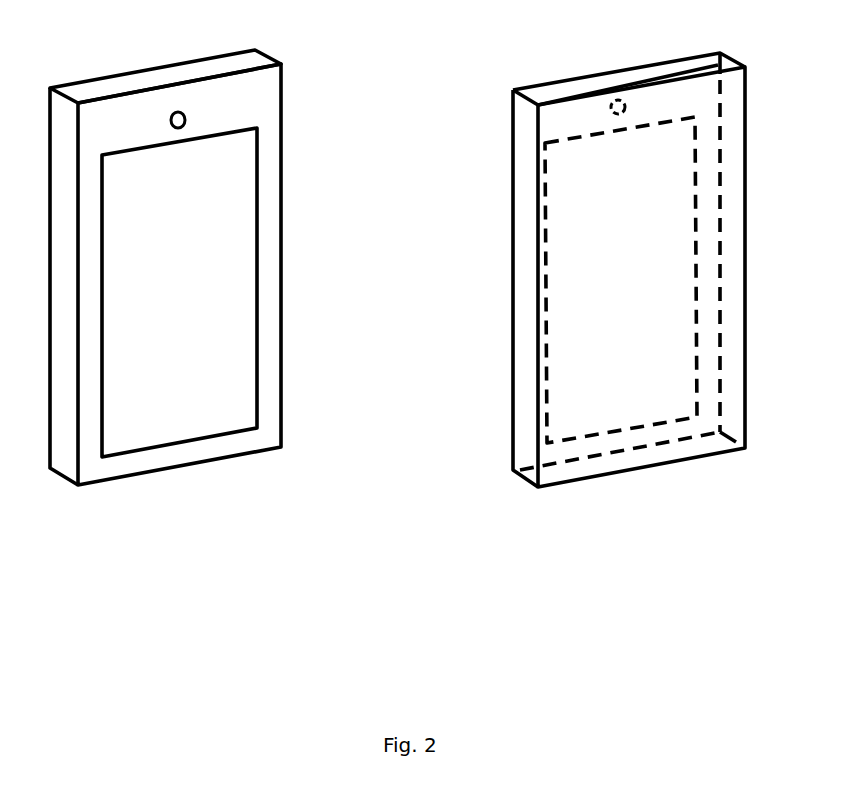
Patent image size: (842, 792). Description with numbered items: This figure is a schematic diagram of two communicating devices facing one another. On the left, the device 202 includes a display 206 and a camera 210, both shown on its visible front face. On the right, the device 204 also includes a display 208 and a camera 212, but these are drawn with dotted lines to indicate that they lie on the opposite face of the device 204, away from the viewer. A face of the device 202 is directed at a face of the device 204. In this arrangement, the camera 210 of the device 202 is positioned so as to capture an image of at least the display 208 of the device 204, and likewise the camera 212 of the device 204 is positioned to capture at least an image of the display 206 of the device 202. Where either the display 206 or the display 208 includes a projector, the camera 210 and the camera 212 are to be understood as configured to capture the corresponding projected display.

The device 202 is at (178, 468).
The device 204 is at (647, 468).
The display 206 is at (258, 393).
The display 208 is at (580, 443).
The camera 210 is at (180, 110).
The camera 212 is at (622, 98).